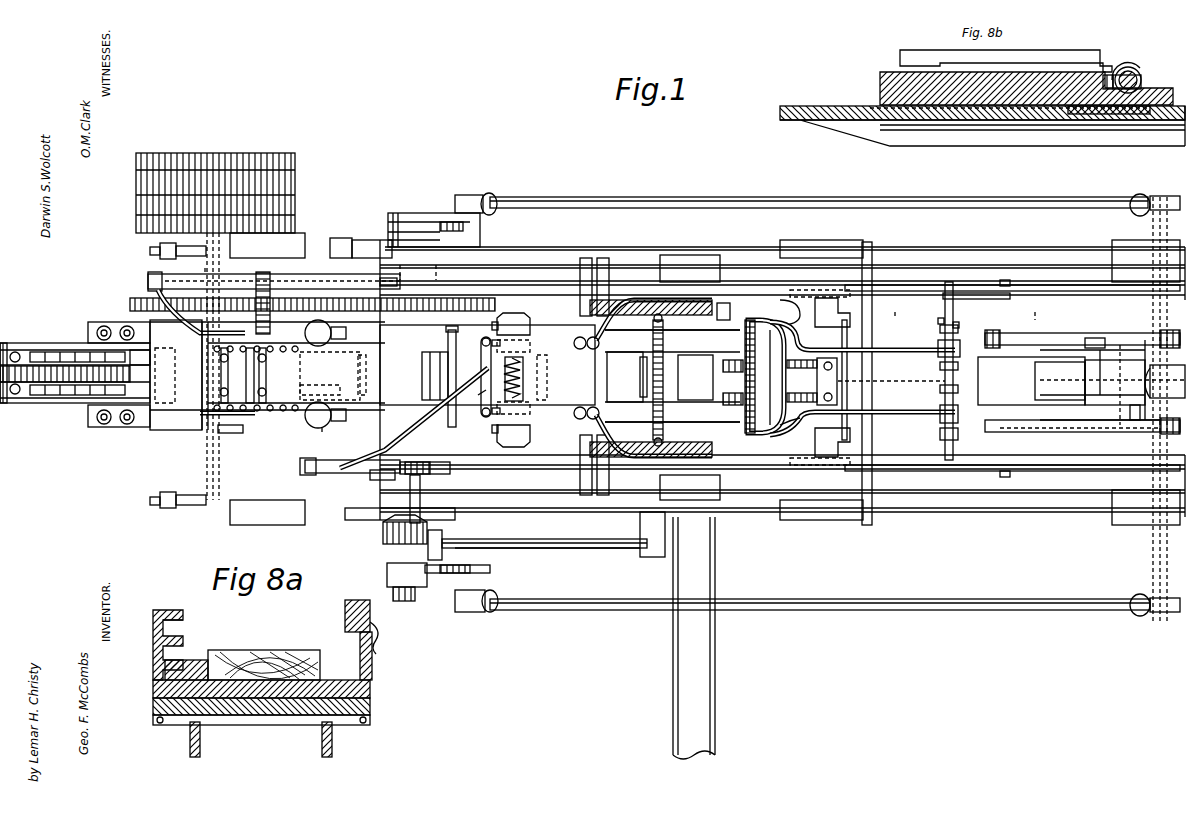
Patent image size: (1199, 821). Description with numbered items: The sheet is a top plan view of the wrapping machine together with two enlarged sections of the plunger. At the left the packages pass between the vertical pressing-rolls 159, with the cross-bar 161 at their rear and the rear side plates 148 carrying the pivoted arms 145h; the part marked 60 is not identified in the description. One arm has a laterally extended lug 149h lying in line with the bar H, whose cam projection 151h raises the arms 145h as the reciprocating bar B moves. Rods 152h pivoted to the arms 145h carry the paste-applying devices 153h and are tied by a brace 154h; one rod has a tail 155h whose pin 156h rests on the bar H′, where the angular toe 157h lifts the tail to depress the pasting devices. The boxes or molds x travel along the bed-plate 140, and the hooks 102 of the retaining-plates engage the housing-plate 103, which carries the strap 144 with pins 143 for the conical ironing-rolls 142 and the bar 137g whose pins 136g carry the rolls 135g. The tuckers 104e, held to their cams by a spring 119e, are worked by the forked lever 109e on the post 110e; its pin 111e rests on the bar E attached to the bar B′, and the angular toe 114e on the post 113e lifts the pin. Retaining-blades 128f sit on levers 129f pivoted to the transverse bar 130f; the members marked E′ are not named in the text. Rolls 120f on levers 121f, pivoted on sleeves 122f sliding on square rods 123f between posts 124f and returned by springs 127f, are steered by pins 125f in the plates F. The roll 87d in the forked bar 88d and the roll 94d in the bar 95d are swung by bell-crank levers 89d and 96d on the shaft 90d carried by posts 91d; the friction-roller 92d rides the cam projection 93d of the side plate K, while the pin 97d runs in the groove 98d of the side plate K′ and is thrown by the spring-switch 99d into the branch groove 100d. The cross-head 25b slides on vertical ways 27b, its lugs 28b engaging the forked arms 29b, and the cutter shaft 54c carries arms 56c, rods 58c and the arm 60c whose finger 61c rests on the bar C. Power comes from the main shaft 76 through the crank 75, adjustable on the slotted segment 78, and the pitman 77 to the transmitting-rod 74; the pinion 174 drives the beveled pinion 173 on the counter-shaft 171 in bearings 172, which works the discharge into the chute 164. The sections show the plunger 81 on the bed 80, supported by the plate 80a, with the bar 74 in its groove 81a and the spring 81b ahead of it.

In FIG. 1, the gun barrel 60 is at (75, 361).
In FIG. 1, the rear side plates 148 is at (148, 375).
In FIG. 1, the box or mold x is at (140, 357).
In FIG. 1, the pressing-rolls 159 is at (178, 443).
In FIG. 1, the cross-bar 161 is at (215, 352).
In FIG. 1, the hooks 102 is at (455, 377).
In FIG. 1, the paste-applying devices 153h is at (339, 375).
In FIG. 1, the brace 154h is at (304, 388).
In FIG. 1, the lug 149h is at (270, 316).
In FIG. 1, the rods 152h is at (311, 383).
In FIG. 1, the tail 155h is at (175, 312).
In FIG. 1, the pin 156h is at (160, 278).
In FIG. 1, the angular toe 157h is at (220, 339).
In FIG. 1, the bar H is at (390, 268).
In FIG. 1, the bar H' is at (193, 267).
In FIG. 1, the cam projection 151h is at (361, 249).
In FIG. 1, the reciprocating bars B is at (436, 265).
In FIG. 1, the reciprocating bar B' is at (681, 400).
In FIG. 1, the crank 75 is at (445, 222).
In FIG. 1, the slotted segment 78 is at (455, 235).
In FIG. 1, the pitman 77 is at (824, 620).
In FIG. 1, the transmitting-rod 74 is at (1152, 267).
In FIG. 8B, the transmitting-rod 74 is at (1138, 72).
In FIG. 1, the bar E is at (327, 437).
In FIG. 1, the post E' is at (574, 376).
In FIG. 1, the springs 127f is at (660, 285).
In FIG. 1, the pins 125f is at (798, 380).
In FIG. 1, the arms 29b is at (790, 290).
In FIG. 1, the lugs 28b is at (815, 377).
In FIG. 1, the vertical ways 27b is at (855, 383).
In FIG. 1, the plates F is at (812, 530).
In FIG. 1, the finger 61c is at (998, 286).
In FIG. 1, the housing-plate 103 is at (487, 365).
In FIG. 1, the ironing or compressing rolls 142 is at (446, 334).
In FIG. 1, the strap 144 is at (421, 376).
In FIG. 1, the pins 143 is at (452, 328).
In FIG. 1, the bar 137g is at (473, 377).
In FIG. 1, the bed-plate 140 is at (480, 372).
In FIG. 1, the pins 136g is at (477, 396).
In FIG. 1, the rolls 135g is at (476, 374).
In FIG. 1, the tuckers 104e is at (513, 377).
In FIG. 1, the spring 119e is at (556, 377).
In FIG. 1, the retaining-blades 128f is at (513, 380).
In FIG. 1, the levers 129f is at (580, 318).
In FIG. 1, the transverse bar 130f is at (623, 453).
In FIG. 1, the rolls 120f is at (573, 380).
In FIG. 1, the posts 124f is at (658, 382).
In FIG. 1, the levers 121f is at (672, 376).
In FIG. 1, the roll 94d is at (630, 377).
In FIG. 1, the square rods 123f is at (671, 380).
In FIG. 1, the sleeves 122f is at (710, 379).
In FIG. 1, the roll 87d is at (761, 369).
In FIG. 1, the bell-crank lever 89d is at (935, 355).
In FIG. 1, the bell-crank lever 96d is at (935, 412).
In FIG. 1, the bar 88d is at (812, 381).
In FIG. 1, the cross-head 25b is at (891, 388).
In FIG. 1, the shaft 54c is at (945, 370).
In FIG. 1, the shaft 90d is at (950, 391).
In FIG. 1, the bar 95d is at (798, 414).
In FIG. 1, the posts 91d is at (937, 371).
In FIG. 1, the rods 58c is at (940, 327).
In FIG. 1, the arms 56c is at (955, 330).
In FIG. 1, the arm 60c is at (976, 304).
In FIG. 1, the reciprocating bar C is at (1034, 377).
In FIG. 1, the friction-roller 92d is at (1082, 331).
In FIG. 1, the pin 97d is at (1040, 420).
In FIG. 1, the side plate K is at (1092, 371).
In FIG. 8A, the side plate K is at (373, 640).
In FIG. 1, the side plate K' is at (1100, 432).
In FIG. 8A, the side plate K' is at (160, 645).
In FIG. 1, the cam projection 93d is at (1105, 333).
In FIG. 8A, the cam projection 93d is at (368, 620).
In FIG. 8B, the cam projection 93d is at (1062, 60).
In FIG. 1, the plunger 81 is at (1031, 381).
In FIG. 8A, the plunger 81 is at (285, 658).
In FIG. 8B, the plunger 81 is at (985, 88).
In FIG. 1, the bed 80 is at (1081, 382).
In FIG. 8A, the bed 80 is at (272, 716).
In FIG. 8B, the bed 80 is at (982, 126).
In FIG. 1, the spring 81b is at (1150, 382).
In FIG. 8B, the spring 81b is at (1118, 68).
In FIG. 8B, the groove 81a is at (1142, 80).
In FIG. 8A, the plate 80a is at (240, 700).
In FIG. 8B, the plate 80a is at (1115, 106).
In FIG. 1, the spring-switch 99d is at (1128, 413).
In FIG. 8A, the groove 98d is at (185, 622).
In FIG. 8A, the branch groove 100d is at (190, 650).
In FIG. 1, the pin 111e is at (300, 476).
In FIG. 1, the post 110e is at (400, 463).
In FIG. 1, the post 113e is at (400, 478).
In FIG. 1, the angular toe 114e is at (400, 499).
In FIG. 1, the forked lever 109e is at (410, 440).
In FIG. 1, the pinion 174 is at (383, 540).
In FIG. 1, the beveled pinion 173 is at (445, 540).
In FIG. 1, the bearings 172 is at (546, 546).
In FIG. 1, the counter-shaft 171 is at (547, 559).
In FIG. 1, the power-shaft 76 is at (385, 561).
In FIG. 1, the chute 164 is at (718, 571).
In FIG. 1, the arms 145h is at (232, 440).